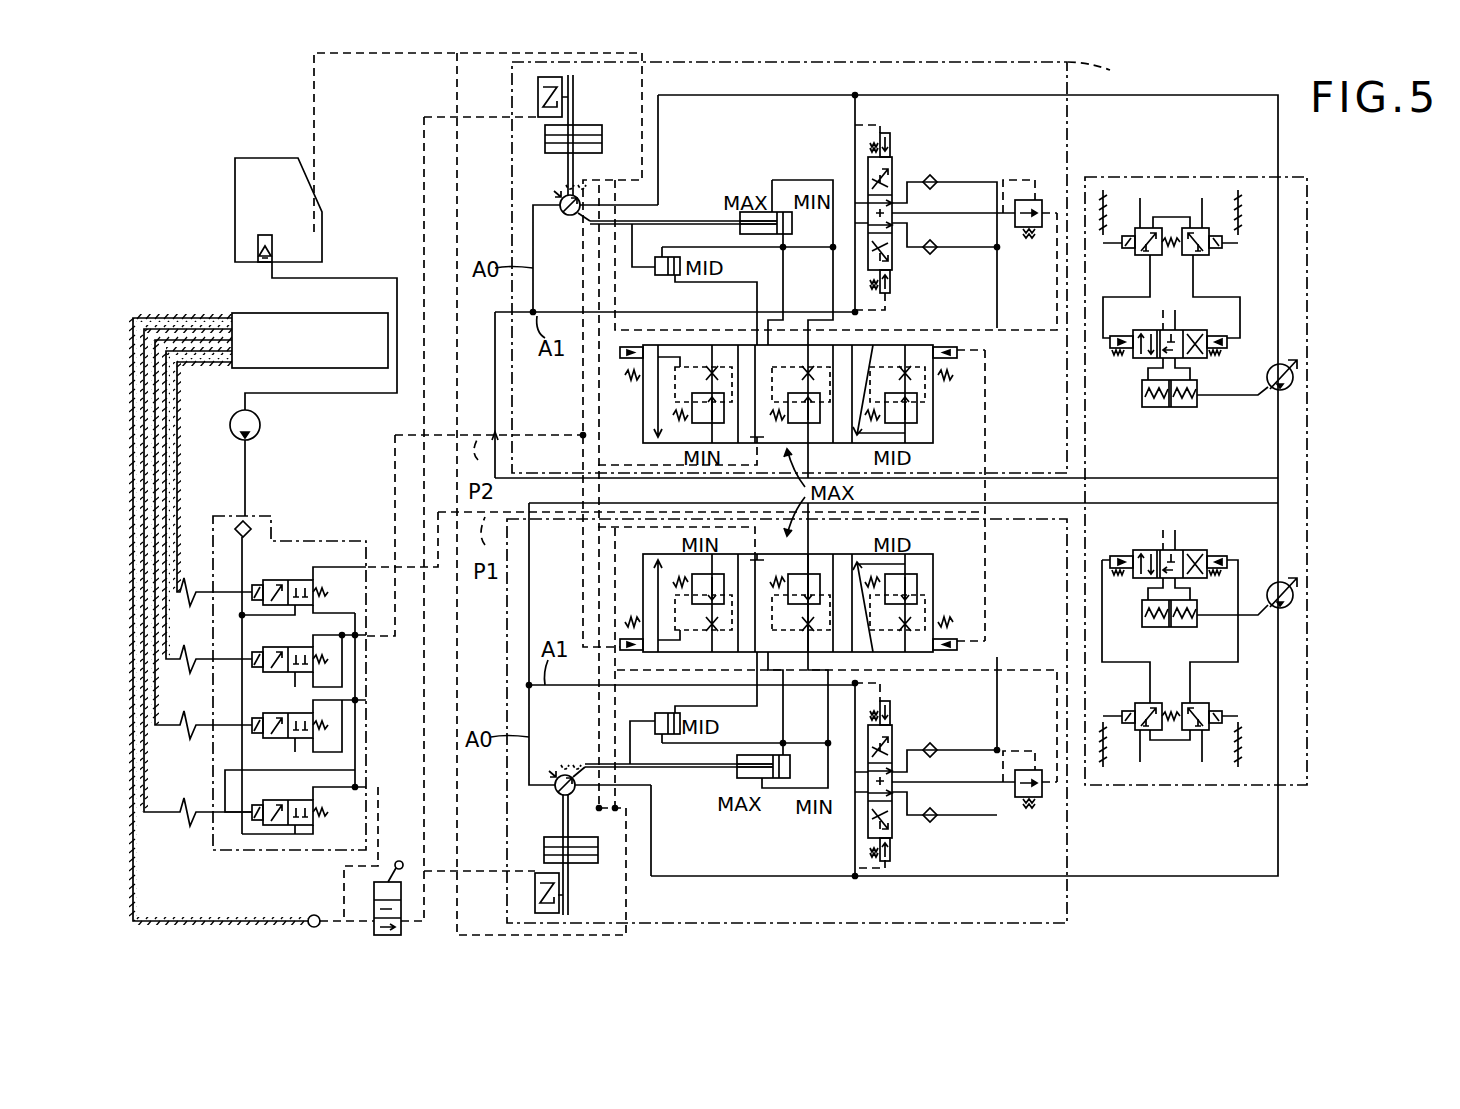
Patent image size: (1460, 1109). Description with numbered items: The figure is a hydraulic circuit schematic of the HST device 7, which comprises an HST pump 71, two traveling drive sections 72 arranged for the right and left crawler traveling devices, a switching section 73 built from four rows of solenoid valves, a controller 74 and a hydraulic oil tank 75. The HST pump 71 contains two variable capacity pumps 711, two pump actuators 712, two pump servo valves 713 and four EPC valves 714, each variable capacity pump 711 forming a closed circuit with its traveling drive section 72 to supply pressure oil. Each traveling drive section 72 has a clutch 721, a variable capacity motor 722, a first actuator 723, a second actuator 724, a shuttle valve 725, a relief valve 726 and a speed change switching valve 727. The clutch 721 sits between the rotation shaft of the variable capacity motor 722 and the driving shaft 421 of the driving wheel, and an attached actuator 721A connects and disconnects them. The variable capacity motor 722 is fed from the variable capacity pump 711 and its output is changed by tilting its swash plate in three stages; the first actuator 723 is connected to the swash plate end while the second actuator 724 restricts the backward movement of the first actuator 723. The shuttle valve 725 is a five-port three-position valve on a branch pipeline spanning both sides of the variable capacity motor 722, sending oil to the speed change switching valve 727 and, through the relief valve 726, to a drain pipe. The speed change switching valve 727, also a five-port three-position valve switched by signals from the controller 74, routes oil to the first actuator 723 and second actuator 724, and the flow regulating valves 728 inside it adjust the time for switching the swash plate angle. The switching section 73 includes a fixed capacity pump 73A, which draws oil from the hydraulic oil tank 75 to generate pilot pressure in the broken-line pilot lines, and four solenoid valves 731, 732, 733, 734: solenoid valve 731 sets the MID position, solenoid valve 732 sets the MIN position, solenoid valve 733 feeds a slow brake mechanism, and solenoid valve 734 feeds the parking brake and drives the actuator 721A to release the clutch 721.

The HST device 7 is at (166, 125).
The hydraulic oil tank 75 is at (270, 157).
The controller 74 is at (257, 313).
The fixed capacity pump 73A is at (261, 426).
The switching section 73 is at (269, 693).
The solenoid valve 731 is at (280, 580).
The solenoid valve 732 is at (254, 675).
The solenoid valve 733 is at (254, 740).
The solenoid valve 734 is at (300, 826).
The actuator 721A is at (538, 96).
The driving shaft 421 is at (577, 96).
The clutch 721 is at (602, 138).
The variable capacity motor 722 is at (565, 215).
The first actuator 723 is at (763, 210).
The second actuator 724 is at (668, 276).
The shuttle valve 725 is at (895, 258).
The relief valve 726 is at (1038, 230).
The speed change switching valve 727 is at (933, 400).
The flow regulating valve 728 is at (697, 393).
The traveling drive section 72 is at (1096, 906).
The HST pump 71 is at (1140, 178).
The variable capacity pump 711 is at (1297, 388).
The pump actuator 712 is at (1190, 410).
The pump servo valve 713 is at (1202, 360).
The EPC valve 714 is at (1148, 258).